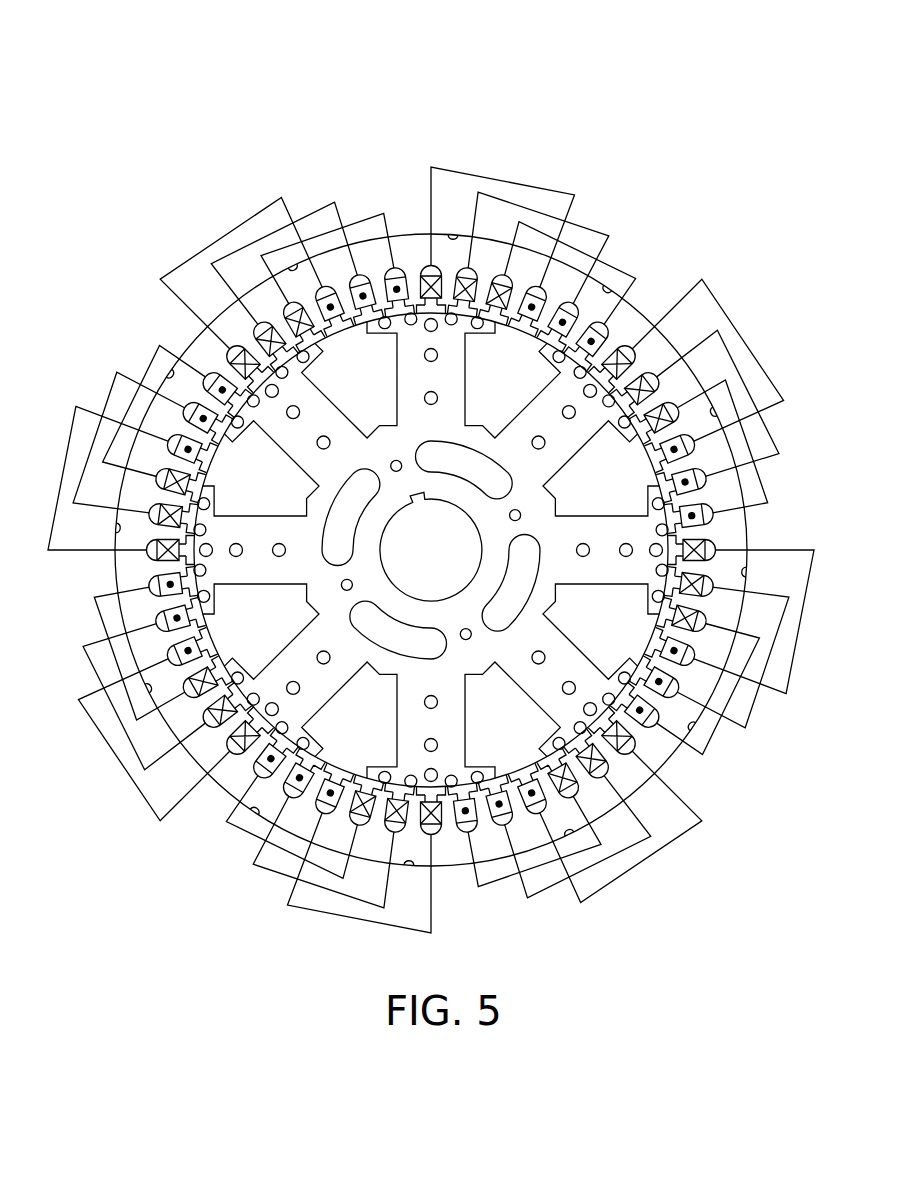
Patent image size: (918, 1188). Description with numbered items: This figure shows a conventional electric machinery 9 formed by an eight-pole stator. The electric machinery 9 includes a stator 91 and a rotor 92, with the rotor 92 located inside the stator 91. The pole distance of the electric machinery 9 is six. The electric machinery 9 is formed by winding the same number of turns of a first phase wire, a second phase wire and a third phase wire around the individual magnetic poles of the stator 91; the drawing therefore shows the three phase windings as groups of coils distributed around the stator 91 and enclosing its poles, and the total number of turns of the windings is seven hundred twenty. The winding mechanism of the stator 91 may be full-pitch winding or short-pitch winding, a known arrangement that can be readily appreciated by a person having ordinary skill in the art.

The electric machinery 9 is at (546, 118).
The stator 91 is at (635, 312).
The rotor 92 is at (403, 375).